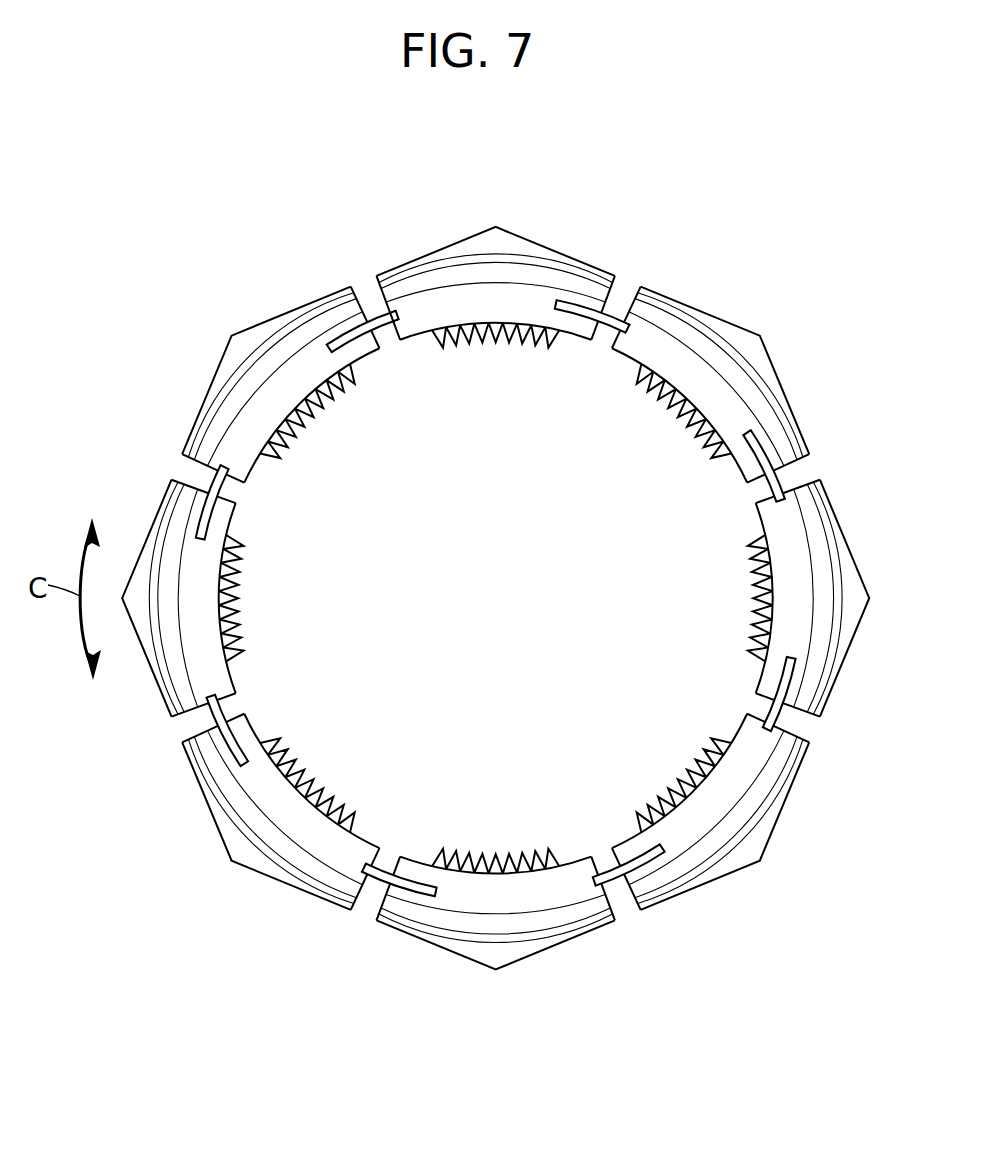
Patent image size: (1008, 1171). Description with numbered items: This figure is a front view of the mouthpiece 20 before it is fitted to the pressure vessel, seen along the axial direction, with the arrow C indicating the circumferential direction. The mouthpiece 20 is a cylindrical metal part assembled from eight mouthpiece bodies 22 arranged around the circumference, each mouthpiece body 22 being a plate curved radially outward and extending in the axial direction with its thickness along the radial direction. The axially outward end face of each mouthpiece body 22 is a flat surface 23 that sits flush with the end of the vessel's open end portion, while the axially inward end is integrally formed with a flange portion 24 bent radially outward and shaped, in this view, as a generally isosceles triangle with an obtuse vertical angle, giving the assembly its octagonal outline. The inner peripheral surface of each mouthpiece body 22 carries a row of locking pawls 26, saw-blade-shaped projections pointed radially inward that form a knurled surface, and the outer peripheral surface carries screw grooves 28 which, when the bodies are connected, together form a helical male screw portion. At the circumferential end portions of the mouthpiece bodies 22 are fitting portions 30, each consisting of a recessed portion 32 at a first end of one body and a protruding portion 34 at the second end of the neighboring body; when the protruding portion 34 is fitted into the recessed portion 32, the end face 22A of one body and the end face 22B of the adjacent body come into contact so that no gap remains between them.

The mouthpiece 20 is at (673, 213).
The mouthpiece body 22 is at (459, 239).
The end face 22A is at (790, 463).
The end face 22B is at (802, 478).
The flat surface 23 is at (316, 848).
The flange portion 24 is at (766, 333).
The locking pawl 26 is at (491, 348).
The screw groove 28 is at (302, 312).
The fitting portion 30 is at (390, 338).
The recessed portion 32 is at (210, 522).
The protruding portion 34 is at (207, 488).